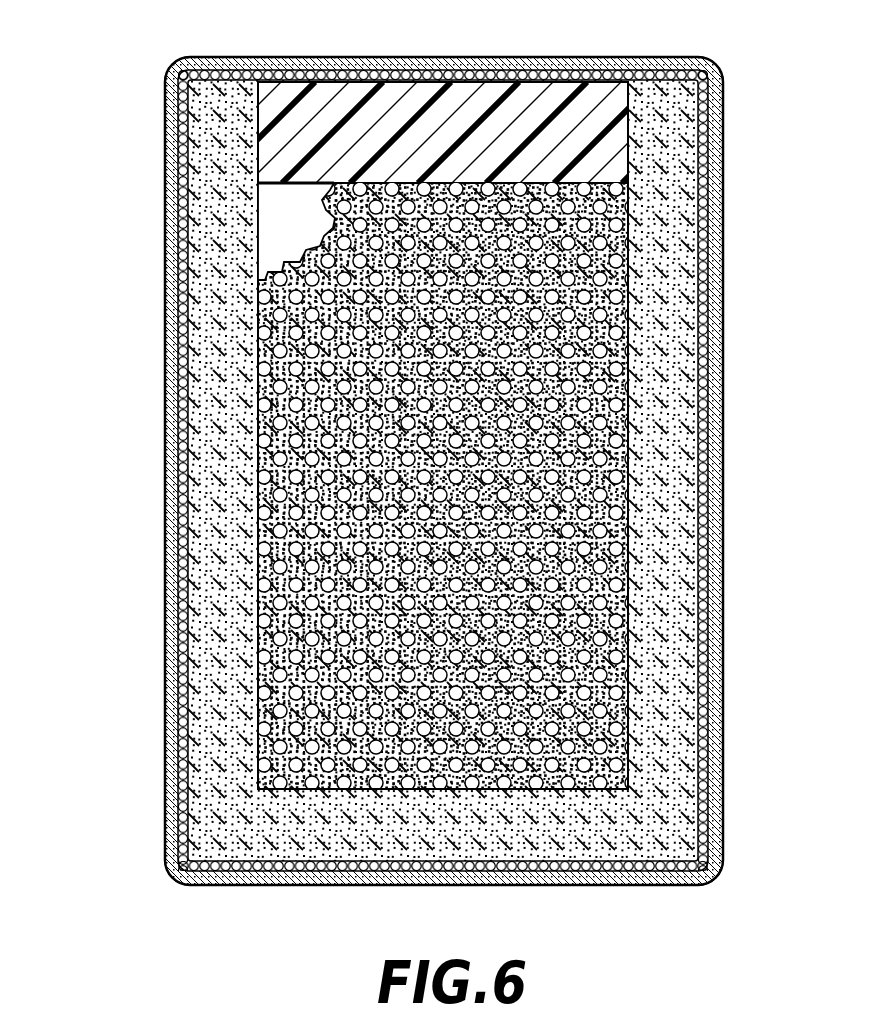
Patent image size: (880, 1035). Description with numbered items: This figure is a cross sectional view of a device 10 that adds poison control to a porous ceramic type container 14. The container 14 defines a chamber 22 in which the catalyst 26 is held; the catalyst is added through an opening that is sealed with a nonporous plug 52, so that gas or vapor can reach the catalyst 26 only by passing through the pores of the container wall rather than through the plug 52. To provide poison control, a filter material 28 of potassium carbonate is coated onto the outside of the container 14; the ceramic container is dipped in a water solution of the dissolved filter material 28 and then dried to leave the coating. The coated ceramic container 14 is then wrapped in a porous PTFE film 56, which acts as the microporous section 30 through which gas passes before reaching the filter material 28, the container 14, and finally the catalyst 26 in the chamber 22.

The device 10 is at (150, 135).
The container 14 is at (172, 779).
The chamber 22 is at (272, 216).
The catalyst 26 is at (590, 542).
The filter material 28 is at (180, 268).
The microporous section 30 is at (182, 418).
The nonporous plug 52 is at (463, 95).
The porous PTFE film 56 is at (725, 707).